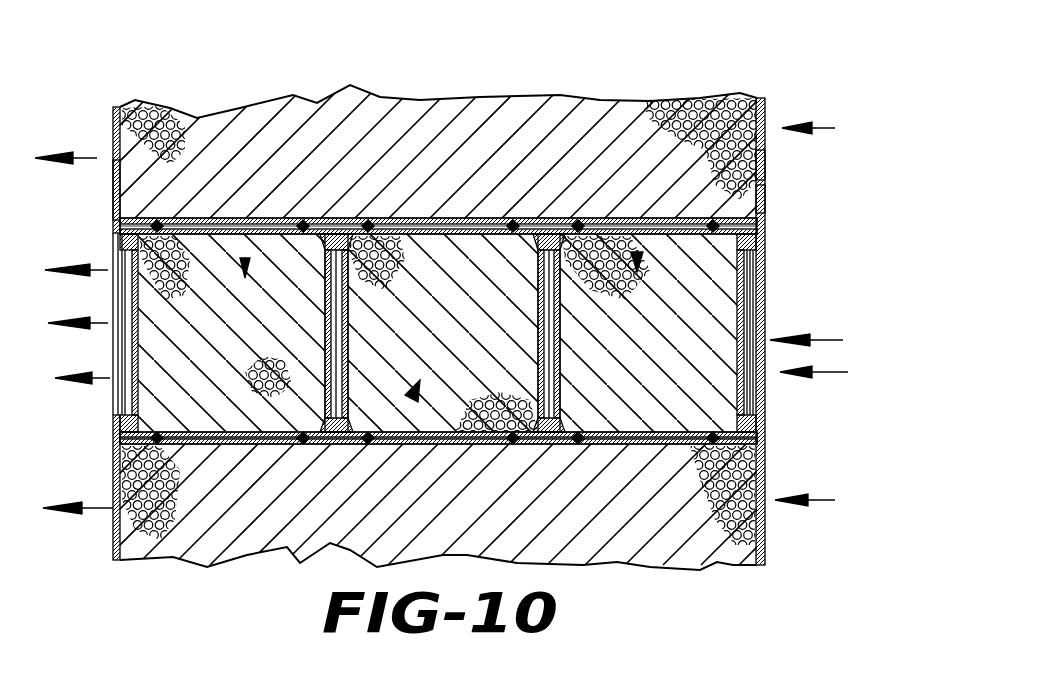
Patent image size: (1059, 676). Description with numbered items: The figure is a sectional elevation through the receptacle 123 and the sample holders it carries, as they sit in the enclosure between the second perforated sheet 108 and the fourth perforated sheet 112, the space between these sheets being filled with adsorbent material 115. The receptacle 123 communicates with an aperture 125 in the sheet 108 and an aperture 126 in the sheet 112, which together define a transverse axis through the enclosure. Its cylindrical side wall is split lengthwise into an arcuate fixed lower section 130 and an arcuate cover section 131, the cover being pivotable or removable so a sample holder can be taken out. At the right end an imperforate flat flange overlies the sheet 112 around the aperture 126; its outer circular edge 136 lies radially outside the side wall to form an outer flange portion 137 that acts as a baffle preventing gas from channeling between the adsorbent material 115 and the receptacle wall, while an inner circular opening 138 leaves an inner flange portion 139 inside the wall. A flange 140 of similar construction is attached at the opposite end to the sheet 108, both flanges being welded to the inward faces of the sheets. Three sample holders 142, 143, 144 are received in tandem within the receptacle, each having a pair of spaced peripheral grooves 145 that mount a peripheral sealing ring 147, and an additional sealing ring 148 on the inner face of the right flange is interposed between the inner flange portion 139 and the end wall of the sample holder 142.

The second perforated sheet 108 is at (116, 110).
The fourth perforated sheet 112 is at (765, 105).
The adsorbent material 115 is at (475, 103).
The receptacle 123 is at (350, 452).
The aperture 125 is at (108, 412).
The aperture 126 is at (757, 252).
The fixed lower section 130 is at (445, 446).
The cover section 131 is at (465, 218).
The outer circular edge 136 is at (748, 172).
The outer flange portion 137 is at (760, 198).
The inner circular opening 138 is at (766, 282).
The inner flange portion 139 is at (760, 232).
The flange 140 is at (118, 208).
The sample holder 142 is at (637, 262).
The sample holder 143 is at (414, 398).
The sample holder 144 is at (245, 258).
The peripheral grooves 145 is at (513, 235).
The peripheral sealing ring 147 is at (372, 230).
The additional sealing ring 148 is at (742, 295).